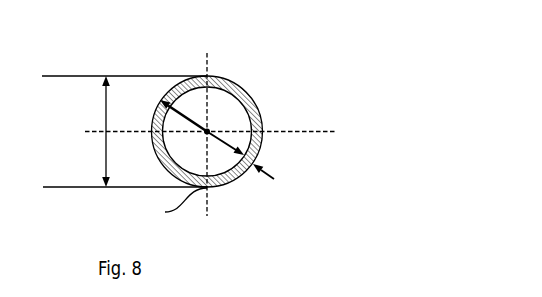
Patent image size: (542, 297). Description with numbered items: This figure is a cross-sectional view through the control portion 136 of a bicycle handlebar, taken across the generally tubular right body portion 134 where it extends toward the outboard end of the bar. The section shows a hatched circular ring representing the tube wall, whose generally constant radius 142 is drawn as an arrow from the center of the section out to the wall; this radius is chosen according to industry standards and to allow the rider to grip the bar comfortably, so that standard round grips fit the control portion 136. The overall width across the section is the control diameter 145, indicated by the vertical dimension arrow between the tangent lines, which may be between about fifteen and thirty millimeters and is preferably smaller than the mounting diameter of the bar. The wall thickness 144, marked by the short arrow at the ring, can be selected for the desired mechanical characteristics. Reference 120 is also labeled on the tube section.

The tube 120 is at (168, 206).
The right body portion 134 is at (209, 130).
The control portion 136 is at (242, 85).
The radius 142 is at (186, 117).
The wall thickness 144 is at (274, 179).
The control diameter 145 is at (103, 97).